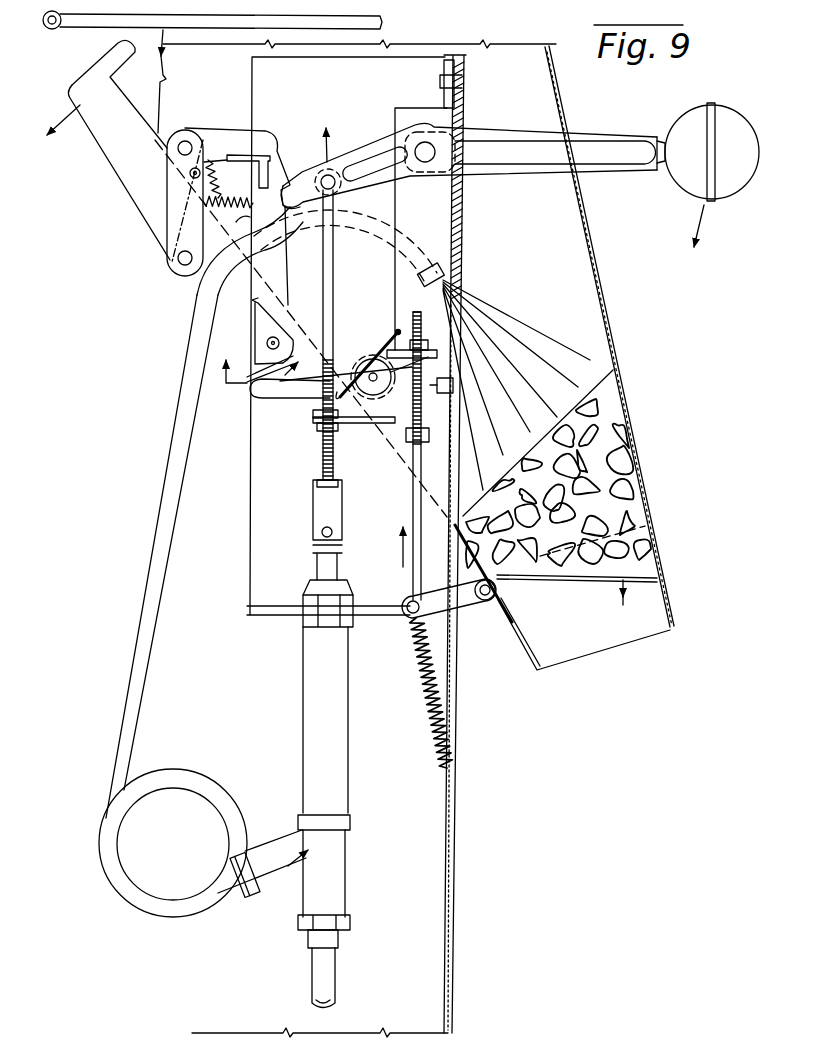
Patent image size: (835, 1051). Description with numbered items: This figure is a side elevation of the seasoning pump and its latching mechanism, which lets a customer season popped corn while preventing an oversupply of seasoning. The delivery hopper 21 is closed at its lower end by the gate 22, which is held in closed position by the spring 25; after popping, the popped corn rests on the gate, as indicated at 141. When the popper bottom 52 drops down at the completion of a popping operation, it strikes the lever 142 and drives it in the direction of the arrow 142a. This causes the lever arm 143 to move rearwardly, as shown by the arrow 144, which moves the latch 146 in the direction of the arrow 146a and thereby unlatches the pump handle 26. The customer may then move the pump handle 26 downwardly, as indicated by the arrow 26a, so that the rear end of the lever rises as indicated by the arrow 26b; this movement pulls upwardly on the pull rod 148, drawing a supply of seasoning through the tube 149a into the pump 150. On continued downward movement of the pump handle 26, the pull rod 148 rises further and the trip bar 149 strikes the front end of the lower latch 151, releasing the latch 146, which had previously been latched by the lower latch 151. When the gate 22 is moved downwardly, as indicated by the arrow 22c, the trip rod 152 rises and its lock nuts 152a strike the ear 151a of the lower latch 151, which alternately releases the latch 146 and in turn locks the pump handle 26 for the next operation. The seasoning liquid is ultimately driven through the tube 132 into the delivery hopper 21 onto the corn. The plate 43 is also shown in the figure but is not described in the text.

The popper bottom 52 is at (108, 22).
The arrow 142a is at (43, 138).
The lever 142 is at (120, 146).
The lever arm 143 is at (160, 190).
The arrow 144 is at (224, 125).
The pump handle 26 is at (610, 157).
The arrow 26a is at (704, 222).
The arrow 26b is at (318, 145).
The arrow 146a is at (262, 272).
The latch 146 is at (258, 292).
The lower latch 151 is at (290, 392).
The ear 151a is at (402, 350).
The mounting plate 43 is at (288, 474).
The trip bar 149 is at (353, 424).
The trip rod 152 is at (411, 513).
The lock nuts 152a is at (407, 444).
The pull rod 148 is at (312, 517).
The pump 150 is at (320, 698).
The tube 149a is at (327, 970).
The tube 132 is at (162, 540).
The spring 25 is at (453, 720).
The delivery hopper 21 is at (633, 424).
The popped corn 141 is at (640, 497).
The gate 22 is at (655, 555).
The arrow 22c is at (624, 604).